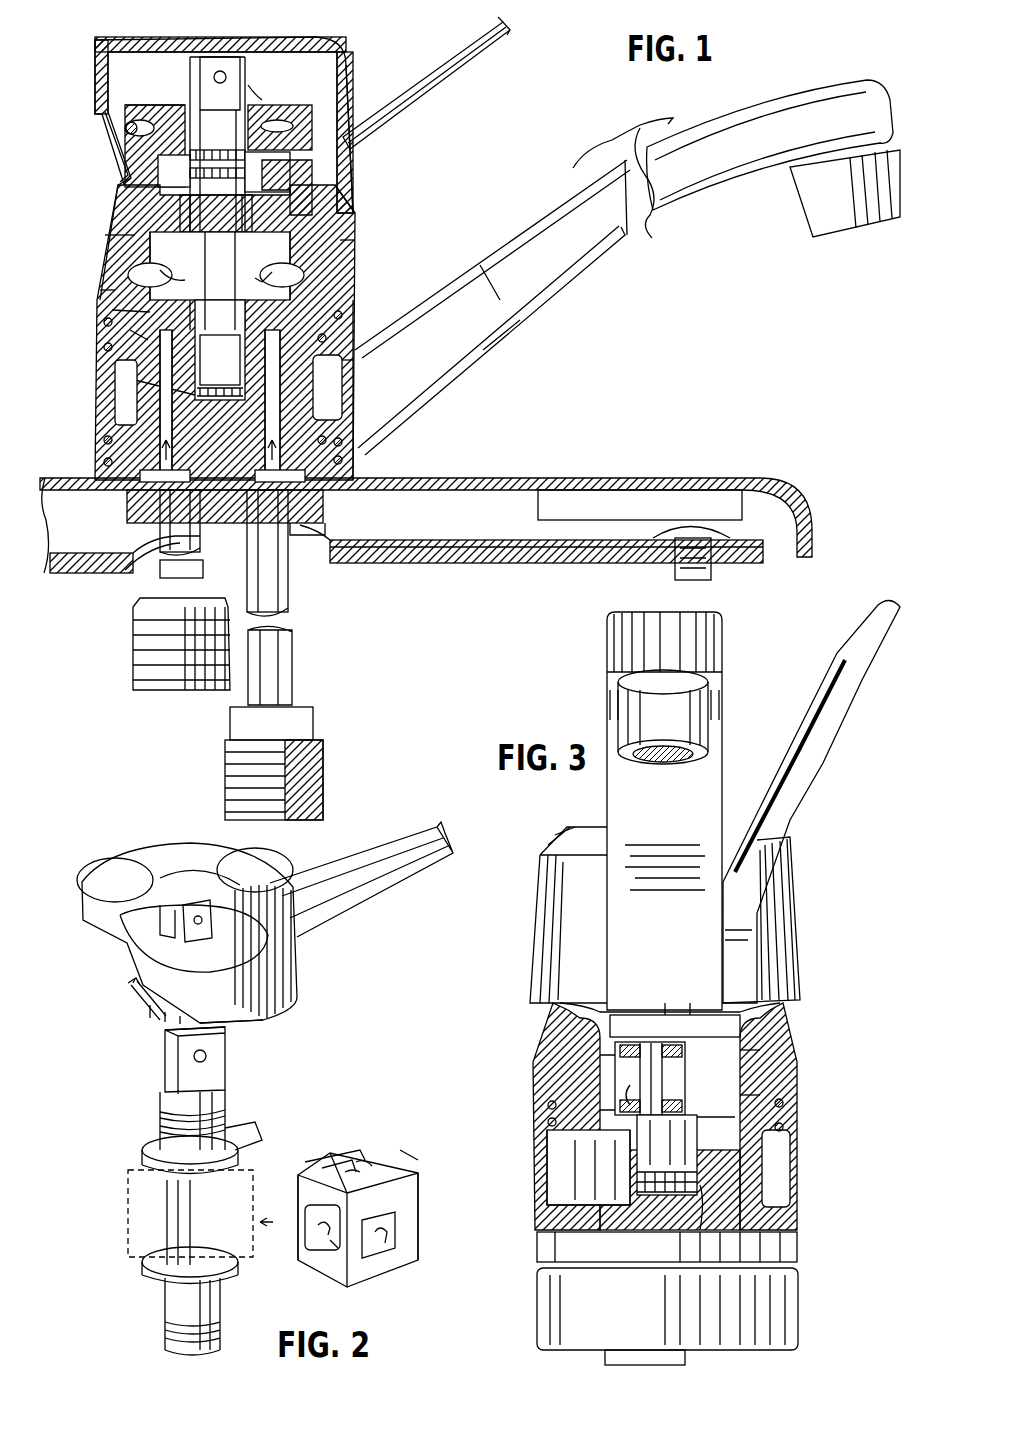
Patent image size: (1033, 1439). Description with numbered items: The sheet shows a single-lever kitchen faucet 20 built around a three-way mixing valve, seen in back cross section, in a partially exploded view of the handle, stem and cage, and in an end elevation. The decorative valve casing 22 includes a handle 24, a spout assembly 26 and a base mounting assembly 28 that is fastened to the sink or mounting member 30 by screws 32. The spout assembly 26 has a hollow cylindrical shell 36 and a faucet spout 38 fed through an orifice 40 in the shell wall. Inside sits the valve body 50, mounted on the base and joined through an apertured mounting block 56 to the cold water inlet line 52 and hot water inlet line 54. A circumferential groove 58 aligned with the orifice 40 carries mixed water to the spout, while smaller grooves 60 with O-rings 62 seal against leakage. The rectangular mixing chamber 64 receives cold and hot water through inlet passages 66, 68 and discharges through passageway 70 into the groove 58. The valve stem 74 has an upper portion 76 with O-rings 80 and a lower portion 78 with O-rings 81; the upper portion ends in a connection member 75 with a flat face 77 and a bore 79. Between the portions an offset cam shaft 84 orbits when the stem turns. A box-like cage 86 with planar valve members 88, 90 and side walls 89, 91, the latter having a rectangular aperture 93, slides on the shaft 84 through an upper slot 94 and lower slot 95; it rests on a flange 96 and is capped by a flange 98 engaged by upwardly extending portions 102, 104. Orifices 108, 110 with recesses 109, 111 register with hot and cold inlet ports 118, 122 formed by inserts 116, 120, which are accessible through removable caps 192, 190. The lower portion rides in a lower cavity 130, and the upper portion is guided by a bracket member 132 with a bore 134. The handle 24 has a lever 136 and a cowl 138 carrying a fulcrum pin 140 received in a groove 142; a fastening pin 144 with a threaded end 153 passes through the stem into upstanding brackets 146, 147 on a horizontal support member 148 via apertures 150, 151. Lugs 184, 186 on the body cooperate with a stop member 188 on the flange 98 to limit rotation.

In FIG. 1, the faucet 20 is at (481, 418).
In FIG. 1, the decorative valve casing 22 is at (366, 265).
In FIG. 3, the decorative valve casing 22 is at (806, 1032).
In FIG. 1, the handle 24 is at (376, 153).
In FIG. 2, the handle 24 is at (315, 981).
In FIG. 1, the spout assembly 26 is at (498, 246).
In FIG. 1, the base mounting assembly 28 is at (648, 468).
In FIG. 1, the mounting member 30 is at (455, 562).
In FIG. 1, the screws 32 is at (700, 566).
In FIG. 1, the hollow cylindrical shell 36 is at (356, 442).
In FIG. 3, the hollow cylindrical shell 36 is at (795, 1238).
In FIG. 1, the faucet spout 38 is at (520, 328).
In FIG. 3, the faucet spout 38 is at (622, 806).
In FIG. 1, the orifice 40 is at (355, 382).
In FIG. 1, the valve body 50 is at (116, 394).
In FIG. 3, the valve body 50 is at (786, 1182).
In FIG. 1, the cold water inlet line 52 is at (295, 660).
In FIG. 1, the hot water inlet line 54 is at (160, 560).
In FIG. 1, the apertured mounting block 56 is at (328, 503).
In FIG. 1, the circumferential groove 58 is at (327, 387).
In FIG. 3, the circumferential groove 58 is at (548, 1165).
In FIG. 1, the circumferential grooves 60 is at (317, 387).
In FIG. 1, the O-rings 62 is at (343, 318).
In FIG. 3, the mixing chamber 64 is at (770, 1102).
In FIG. 1, the inlet passage 66 is at (260, 405).
In FIG. 1, the inlet passage 68 is at (182, 405).
In FIG. 3, the passageway 70 is at (600, 1125).
In FIG. 1, the valve stem 74 is at (273, 196).
In FIG. 2, the valve stem 74 is at (266, 1099).
In FIG. 2, the connection member 75 is at (163, 1058).
In FIG. 1, the upper portion 76 is at (200, 193).
In FIG. 2, the upper portion 76 is at (162, 1095).
In FIG. 3, the upper portion 76 is at (670, 1015).
In FIG. 1, the flat face 77 is at (200, 60).
In FIG. 2, the flat face 77 is at (208, 1058).
In FIG. 2, the lower portion 78 is at (222, 1302).
In FIG. 3, the lower portion 78 is at (698, 1150).
In FIG. 2, the cylindrical bore 79 is at (214, 1034).
In FIG. 1, the O-rings 80 is at (267, 172).
In FIG. 2, the O-rings 80 is at (160, 1125).
In FIG. 1, the O-rings 81 is at (135, 382).
In FIG. 2, the O-rings 81 is at (165, 1340).
In FIG. 3, the O-rings 81 is at (702, 1218).
In FIG. 1, the offset cam shaft 84 is at (210, 290).
In FIG. 2, the offset cam shaft 84 is at (168, 1226).
In FIG. 3, the offset cam shaft 84 is at (665, 1082).
In FIG. 2, the cage 86 is at (377, 1127).
In FIG. 3, the cage 86 is at (650, 1078).
In FIG. 1, the planar valve member 88 is at (220, 316).
In FIG. 2, the planar valve member 88 is at (412, 1206).
In FIG. 2, the side wall 89 is at (365, 1170).
In FIG. 3, the side wall 89 is at (690, 1052).
In FIG. 1, the planar valve member 90 is at (250, 390).
In FIG. 2, the planar valve member 90 is at (318, 1222).
In FIG. 2, the side wall 91 is at (315, 1198).
In FIG. 3, the side wall 91 is at (602, 1055).
In FIG. 2, the rectangular aperture 93 is at (332, 1255).
In FIG. 2, the upper slot 94 is at (340, 1178).
In FIG. 3, the upper slot 94 is at (780, 1055).
In FIG. 3, the lower slot 95 is at (667, 1156).
In FIG. 1, the flange 96 is at (112, 336).
In FIG. 2, the flange 96 is at (160, 1272).
In FIG. 3, the flange 96 is at (700, 1120).
In FIG. 1, the flange 98 is at (130, 200).
In FIG. 2, the flange 98 is at (146, 1160).
In FIG. 3, the flange 98 is at (650, 1015).
In FIG. 2, the upwardly extending portion 102 is at (405, 1158).
In FIG. 2, the upwardly extending portion 104 is at (328, 1165).
In FIG. 2, the orifice 108 is at (390, 1250).
In FIG. 1, the recess 109 is at (345, 302).
In FIG. 2, the recess 109 is at (405, 1228).
In FIG. 2, the orifice 110 is at (320, 1230).
In FIG. 3, the orifice 110 is at (630, 1092).
In FIG. 1, the recess 111 is at (108, 316).
In FIG. 1, the hollow cylindrical insert 116 is at (125, 228).
In FIG. 1, the hot water inlet port 118 is at (216, 275).
In FIG. 1, the hollow cylindrical insert 120 is at (345, 240).
In FIG. 1, the cold water inlet port 122 is at (412, 228).
In FIG. 1, the lower cavity 130 is at (222, 464).
In FIG. 1, the bracket member 132 is at (125, 140).
In FIG. 1, the cylindrical bore 134 is at (250, 128).
In FIG. 1, the lever 136 is at (405, 80).
In FIG. 2, the lever 136 is at (375, 908).
In FIG. 3, the lever 136 is at (810, 775).
In FIG. 1, the cowl portion 138 is at (340, 202).
In FIG. 2, the cowl portion 138 is at (275, 1000).
In FIG. 3, the cowl portion 138 is at (785, 960).
In FIG. 1, the fulcrum pin 140 is at (127, 128).
In FIG. 2, the fulcrum pin 140 is at (150, 960).
In FIG. 1, the pin receiving groove 142 is at (160, 120).
In FIG. 1, the fastening pin 144 is at (220, 70).
In FIG. 2, the fastening pin 144 is at (145, 1010).
In FIG. 1, the upstanding bracket 146 is at (226, 90).
In FIG. 2, the upstanding bracket 146 is at (205, 940).
In FIG. 2, the upstanding bracket 147 is at (130, 888).
In FIG. 1, the horizontal support member 148 is at (287, 86).
In FIG. 2, the horizontal support member 148 is at (232, 892).
In FIG. 2, the pin receiving aperture 150 is at (170, 936).
In FIG. 2, the pin receiving aperture 151 is at (170, 878).
In FIG. 2, the threaded end 153 is at (130, 985).
In FIG. 1, the lug 184 is at (217, 179).
In FIG. 1, the lug 186 is at (340, 185).
In FIG. 1, the stop member 188 is at (297, 189).
In FIG. 2, the stop member 188 is at (248, 1122).
In FIG. 1, the removable cap 190 is at (345, 282).
In FIG. 1, the removable cap 192 is at (105, 293).